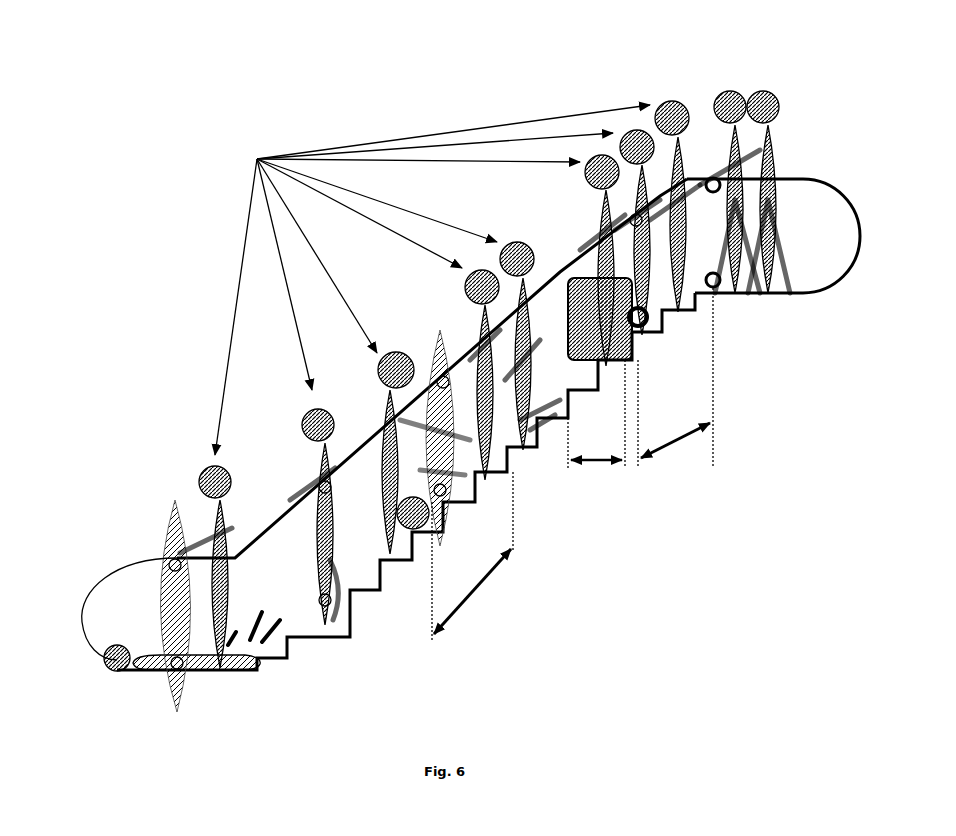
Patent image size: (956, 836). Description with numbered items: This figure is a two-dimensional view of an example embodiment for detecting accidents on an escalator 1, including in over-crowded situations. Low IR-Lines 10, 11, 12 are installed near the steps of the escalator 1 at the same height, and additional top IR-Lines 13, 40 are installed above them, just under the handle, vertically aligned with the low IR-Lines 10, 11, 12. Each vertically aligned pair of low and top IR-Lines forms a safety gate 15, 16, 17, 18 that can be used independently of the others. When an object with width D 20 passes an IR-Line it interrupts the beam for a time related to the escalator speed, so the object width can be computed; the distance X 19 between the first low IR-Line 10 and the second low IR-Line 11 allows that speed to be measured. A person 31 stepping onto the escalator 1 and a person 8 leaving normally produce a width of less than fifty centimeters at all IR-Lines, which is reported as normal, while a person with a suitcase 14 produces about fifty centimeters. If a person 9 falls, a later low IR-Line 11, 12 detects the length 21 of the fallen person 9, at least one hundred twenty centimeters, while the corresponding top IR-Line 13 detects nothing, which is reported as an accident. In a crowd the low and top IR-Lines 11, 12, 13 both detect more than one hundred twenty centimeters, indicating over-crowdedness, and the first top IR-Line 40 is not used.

The escalator 1 is at (847, 192).
The person leaving normally 8 is at (432, 280).
The fallen person 9 is at (105, 652).
The first low IR-Line 10 is at (719, 296).
The second low IR-Line 11 is at (645, 328).
The low IR-Line 12 is at (186, 669).
The top IR-Line 13 is at (168, 560).
The person with a suitcase 14 is at (566, 276).
The safety gate 15 is at (172, 518).
The safety gate 16 is at (315, 462).
The safety gate 17 is at (437, 333).
The safety gate 18 is at (630, 180).
The distance X 19 is at (685, 381).
The width D 20 is at (588, 423).
The length of fallen person 21 is at (487, 556).
The person entering 31 is at (758, 80).
The first top IR-Line 40 is at (712, 176).